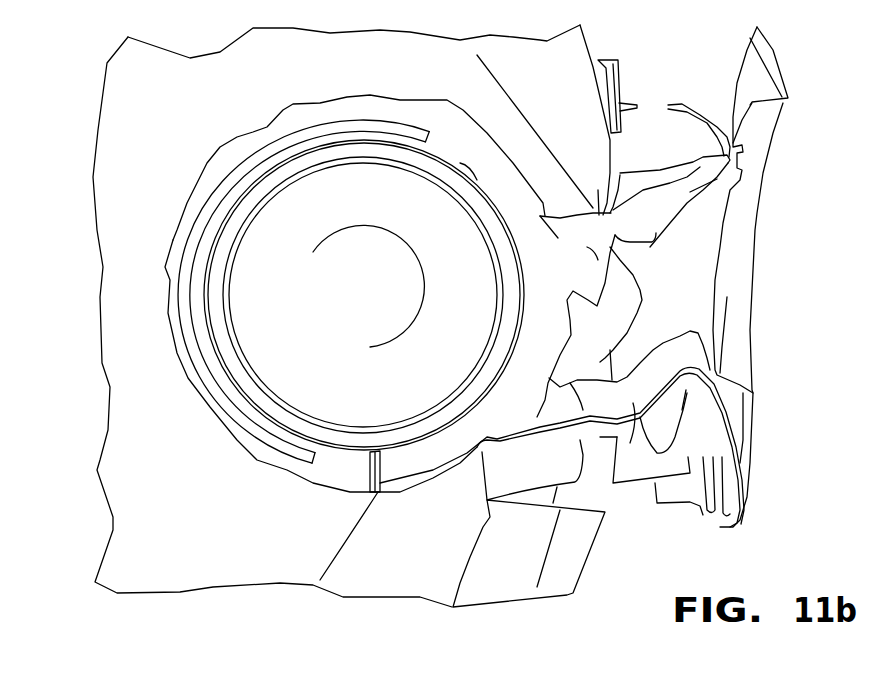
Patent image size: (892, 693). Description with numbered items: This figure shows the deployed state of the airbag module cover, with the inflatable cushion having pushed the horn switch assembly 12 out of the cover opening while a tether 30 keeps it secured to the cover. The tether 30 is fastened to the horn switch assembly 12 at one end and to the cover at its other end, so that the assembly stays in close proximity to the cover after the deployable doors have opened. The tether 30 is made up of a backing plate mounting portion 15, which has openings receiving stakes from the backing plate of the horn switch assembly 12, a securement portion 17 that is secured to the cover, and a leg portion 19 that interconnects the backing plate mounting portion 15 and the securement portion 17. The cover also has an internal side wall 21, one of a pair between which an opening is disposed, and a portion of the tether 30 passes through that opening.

The horn switch assembly 12 is at (200, 186).
The backing plate mounting portion 15 is at (465, 442).
The securement portion 17 is at (622, 402).
The leg portion 19 is at (537, 417).
The internal side wall 21 is at (740, 223).
The tether 30 is at (413, 478).